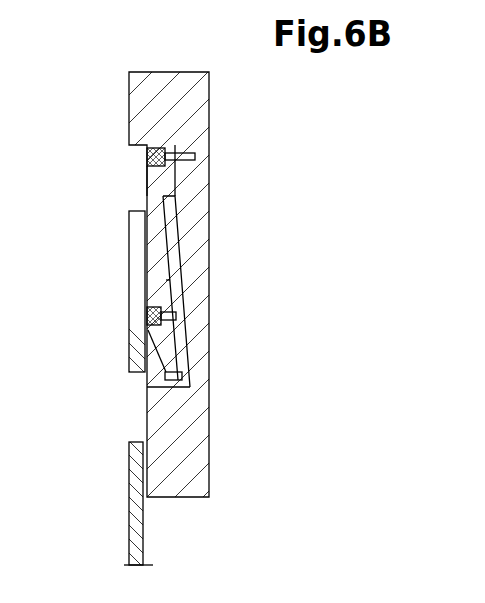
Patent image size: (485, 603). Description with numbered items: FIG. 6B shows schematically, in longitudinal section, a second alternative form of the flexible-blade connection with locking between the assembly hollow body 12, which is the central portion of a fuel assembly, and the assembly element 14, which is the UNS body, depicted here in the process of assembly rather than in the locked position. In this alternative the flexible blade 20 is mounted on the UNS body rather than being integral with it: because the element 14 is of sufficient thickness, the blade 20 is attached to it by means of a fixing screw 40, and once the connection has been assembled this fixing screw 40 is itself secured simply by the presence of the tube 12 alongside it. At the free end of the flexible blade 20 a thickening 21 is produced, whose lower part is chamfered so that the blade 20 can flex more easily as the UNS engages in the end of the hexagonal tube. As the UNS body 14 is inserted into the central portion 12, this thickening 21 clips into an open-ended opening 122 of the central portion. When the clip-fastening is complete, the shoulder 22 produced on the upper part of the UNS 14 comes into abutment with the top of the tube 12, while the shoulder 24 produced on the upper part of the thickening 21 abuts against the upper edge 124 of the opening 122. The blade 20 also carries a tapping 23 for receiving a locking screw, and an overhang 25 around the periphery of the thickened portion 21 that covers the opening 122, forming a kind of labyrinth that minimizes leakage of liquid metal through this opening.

The assembly element 14 is at (156, 84).
The shoulder 22 is at (147, 157).
The fixing screw 40 is at (147, 163).
The flexible blade 20 is at (172, 222).
The shoulder 24 is at (168, 286).
The tapping 23 is at (152, 315).
The thickening 21 is at (214, 381).
The overhang 25 is at (174, 383).
The assembly hollow body 12 is at (200, 401).
The upper edge 124 is at (135, 373).
The open-ended opening 122 is at (135, 418).